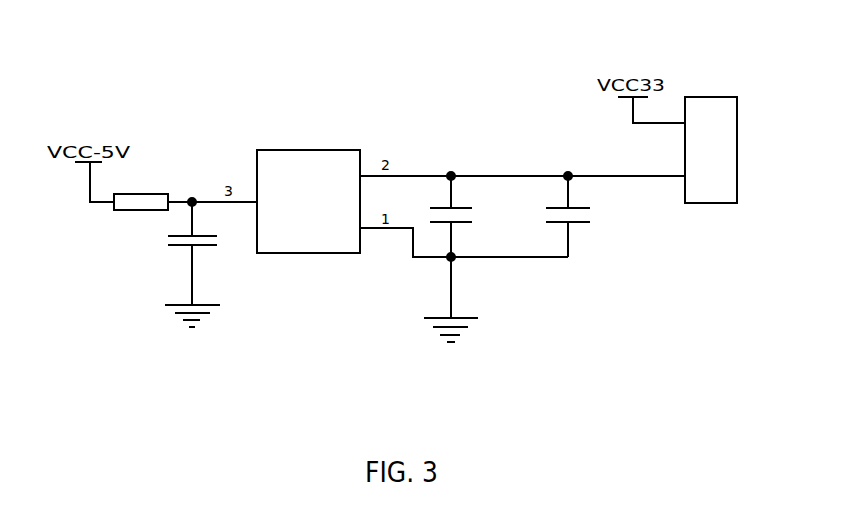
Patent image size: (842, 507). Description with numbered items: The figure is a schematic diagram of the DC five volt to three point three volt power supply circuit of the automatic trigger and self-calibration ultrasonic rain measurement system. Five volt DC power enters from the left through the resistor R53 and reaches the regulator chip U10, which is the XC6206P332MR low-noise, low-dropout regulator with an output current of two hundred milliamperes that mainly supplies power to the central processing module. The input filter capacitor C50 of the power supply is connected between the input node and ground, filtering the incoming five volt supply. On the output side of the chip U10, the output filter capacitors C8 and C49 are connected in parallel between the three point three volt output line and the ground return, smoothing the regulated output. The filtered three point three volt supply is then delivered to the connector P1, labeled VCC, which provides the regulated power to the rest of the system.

The resistor R53 (0 ohm) R53 is at (135, 203).
The input filter capacitor C50 is at (174, 278).
The voltage regulator U10 XC6206P332MR U10 is at (325, 205).
The output filter capacitor C8 is at (467, 272).
The output filter capacitor C49 is at (594, 216).
The connector P1 VCC P1 is at (710, 152).